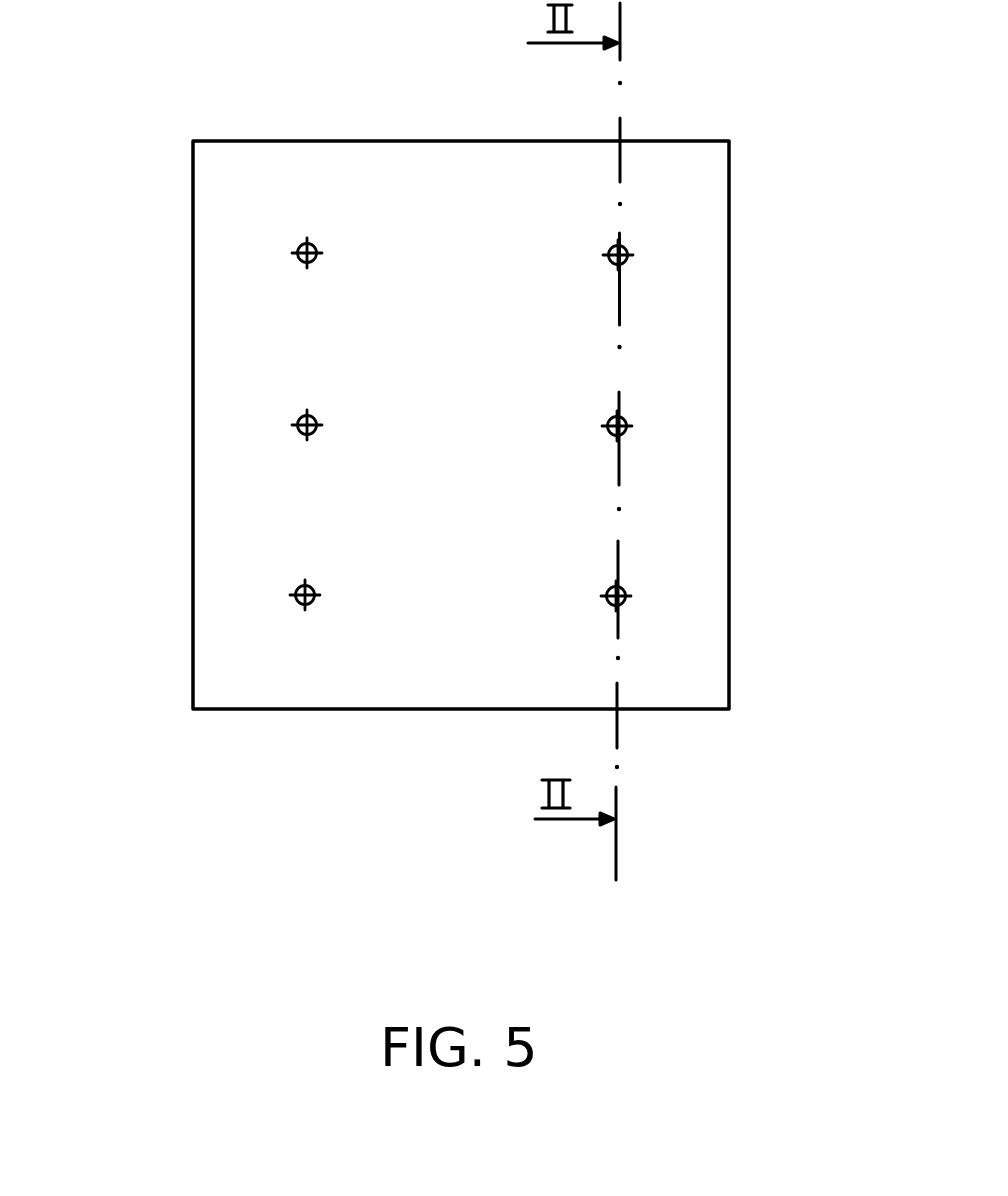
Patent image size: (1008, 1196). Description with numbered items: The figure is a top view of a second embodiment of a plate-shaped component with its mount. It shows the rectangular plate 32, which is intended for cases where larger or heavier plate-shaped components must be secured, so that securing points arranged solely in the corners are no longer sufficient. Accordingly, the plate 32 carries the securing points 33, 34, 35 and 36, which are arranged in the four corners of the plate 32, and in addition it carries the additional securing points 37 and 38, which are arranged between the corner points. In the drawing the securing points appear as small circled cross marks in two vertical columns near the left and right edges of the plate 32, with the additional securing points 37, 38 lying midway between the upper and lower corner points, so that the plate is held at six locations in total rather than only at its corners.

The plate 32 is at (287, 166).
The securing point 33 is at (297, 254).
The securing point 34 is at (628, 255).
The securing point 35 is at (626, 595).
The securing point 36 is at (293, 595).
The additional securing point 37 is at (627, 425).
The additional securing point 38 is at (296, 425).